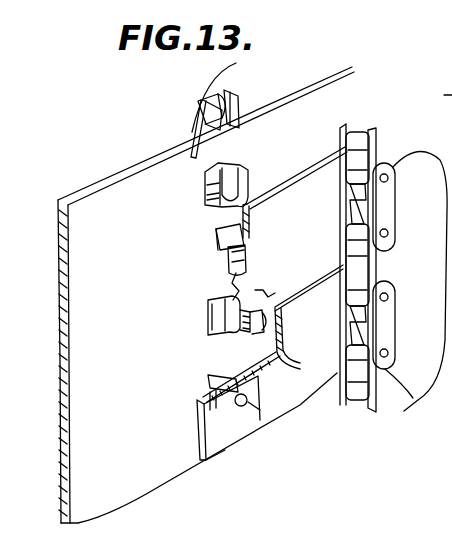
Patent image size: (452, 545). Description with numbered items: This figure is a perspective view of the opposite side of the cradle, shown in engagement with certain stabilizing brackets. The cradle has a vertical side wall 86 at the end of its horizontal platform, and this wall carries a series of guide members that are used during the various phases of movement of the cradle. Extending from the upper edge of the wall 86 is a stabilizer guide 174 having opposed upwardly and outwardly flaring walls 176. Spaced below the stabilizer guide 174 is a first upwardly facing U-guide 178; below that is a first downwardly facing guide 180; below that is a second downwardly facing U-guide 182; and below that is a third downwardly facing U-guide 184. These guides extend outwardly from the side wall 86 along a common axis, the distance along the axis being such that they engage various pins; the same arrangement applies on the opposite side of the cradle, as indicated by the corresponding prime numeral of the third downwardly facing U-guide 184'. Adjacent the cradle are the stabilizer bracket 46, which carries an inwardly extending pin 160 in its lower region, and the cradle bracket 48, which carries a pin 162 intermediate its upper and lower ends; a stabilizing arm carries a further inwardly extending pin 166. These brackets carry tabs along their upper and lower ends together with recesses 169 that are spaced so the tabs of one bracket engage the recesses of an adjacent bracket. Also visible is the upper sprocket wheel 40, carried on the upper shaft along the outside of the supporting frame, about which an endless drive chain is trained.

The upper sprocket wheel 40 is at (420, 350).
The stabilizer bracket 46 is at (314, 372).
The cradle bracket 48 is at (312, 241).
The vertical side wall 86 is at (325, 126).
The pin 160 is at (248, 402).
The pin 162 is at (223, 257).
The pin 166 is at (251, 321).
The recess 169 is at (422, 323).
The stabilizer guide 174 is at (201, 131).
The flaring wall 176 is at (262, 84).
The first upwardly facing U-guide 178 is at (208, 185).
The first downwardly facing guide 180 is at (215, 228).
The second downwardly facing U-guide 182 is at (215, 310).
The third downwardly facing U-guide 184 is at (204, 412).
The third downwardly facing U-guide 184' is at (424, 80).